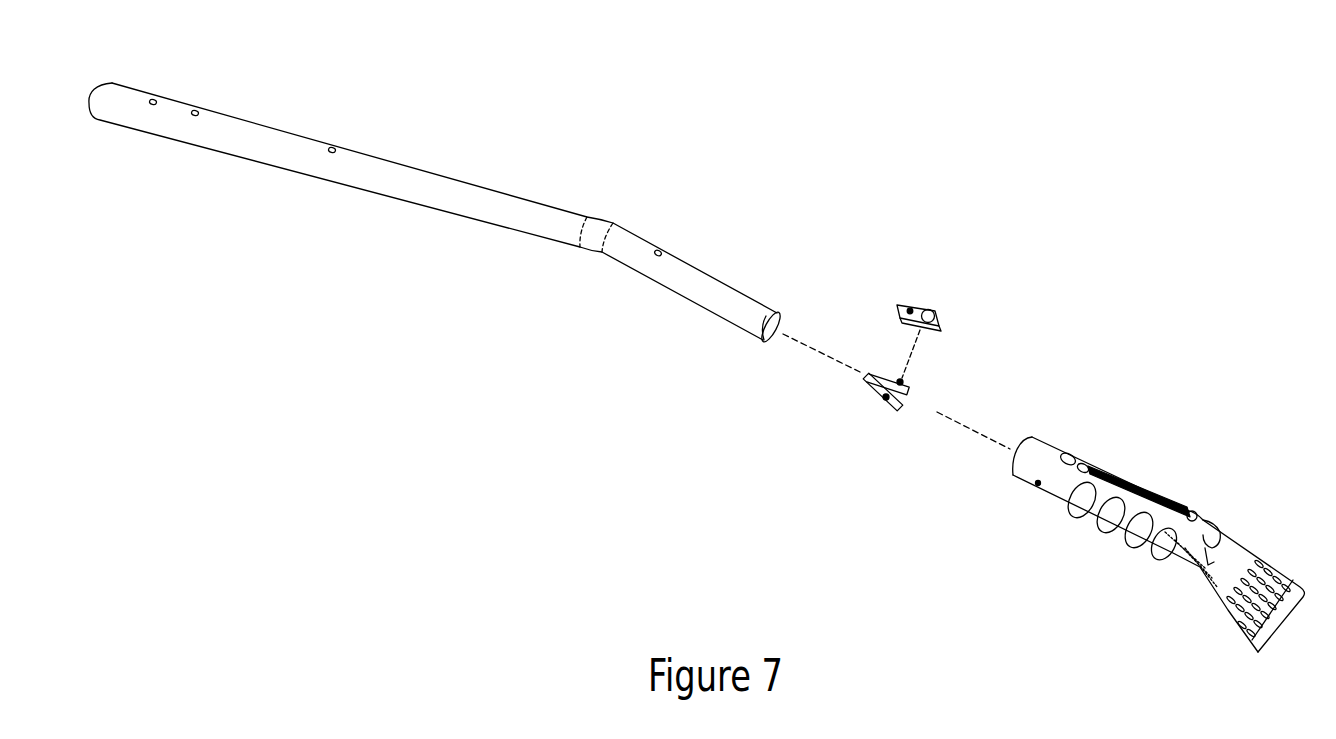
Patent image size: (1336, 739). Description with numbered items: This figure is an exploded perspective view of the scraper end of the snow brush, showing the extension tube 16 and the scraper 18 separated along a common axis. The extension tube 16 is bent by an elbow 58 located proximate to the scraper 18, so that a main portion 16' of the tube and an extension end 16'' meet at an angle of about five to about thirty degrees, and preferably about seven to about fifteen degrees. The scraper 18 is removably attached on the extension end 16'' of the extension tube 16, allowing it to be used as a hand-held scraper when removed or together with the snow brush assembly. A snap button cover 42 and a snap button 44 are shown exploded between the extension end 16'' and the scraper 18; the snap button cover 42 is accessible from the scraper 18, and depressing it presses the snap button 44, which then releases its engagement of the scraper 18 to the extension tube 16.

The extension tube 16 is at (436, 183).
The main portion of the extension tube 16' is at (406, 238).
The extension end 16'' is at (664, 339).
The elbow 58 is at (611, 211).
The snap button cover 42 is at (911, 301).
The snap button 44 is at (886, 397).
The scraper 18 is at (1038, 483).